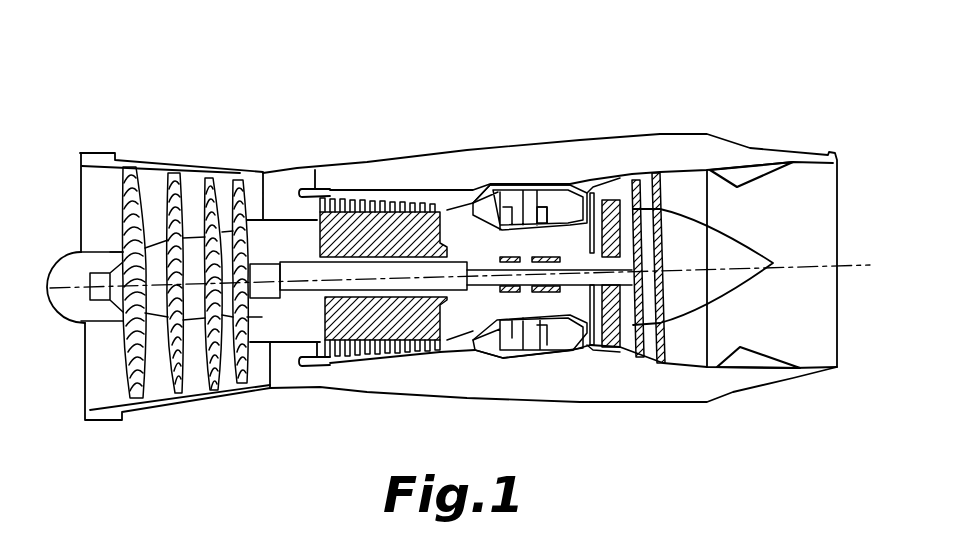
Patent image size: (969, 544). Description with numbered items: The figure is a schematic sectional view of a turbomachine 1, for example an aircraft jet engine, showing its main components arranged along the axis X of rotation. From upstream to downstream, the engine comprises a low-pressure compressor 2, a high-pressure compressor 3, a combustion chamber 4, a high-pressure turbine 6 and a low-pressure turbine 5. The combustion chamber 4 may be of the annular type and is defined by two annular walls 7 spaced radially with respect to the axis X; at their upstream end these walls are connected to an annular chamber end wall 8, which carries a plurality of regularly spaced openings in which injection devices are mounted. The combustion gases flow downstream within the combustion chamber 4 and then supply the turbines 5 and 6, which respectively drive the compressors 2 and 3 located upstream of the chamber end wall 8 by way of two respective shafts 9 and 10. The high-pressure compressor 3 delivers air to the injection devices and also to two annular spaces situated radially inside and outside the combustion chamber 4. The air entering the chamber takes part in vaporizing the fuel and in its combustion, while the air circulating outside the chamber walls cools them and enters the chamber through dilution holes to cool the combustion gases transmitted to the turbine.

The turbomachine 1 is at (541, 66).
The low-pressure compressor 2 is at (153, 186).
The high-pressure compressor 3 is at (355, 190).
The combustion chamber 4 is at (517, 233).
The low-pressure turbine 5 is at (629, 173).
The high-pressure turbine 6 is at (592, 184).
The annular walls 7 is at (540, 215).
The chamber end wall 8 is at (478, 186).
The shaft 9 is at (305, 290).
The shaft 10 is at (553, 290).
The axis of rotation X is at (460, 262).